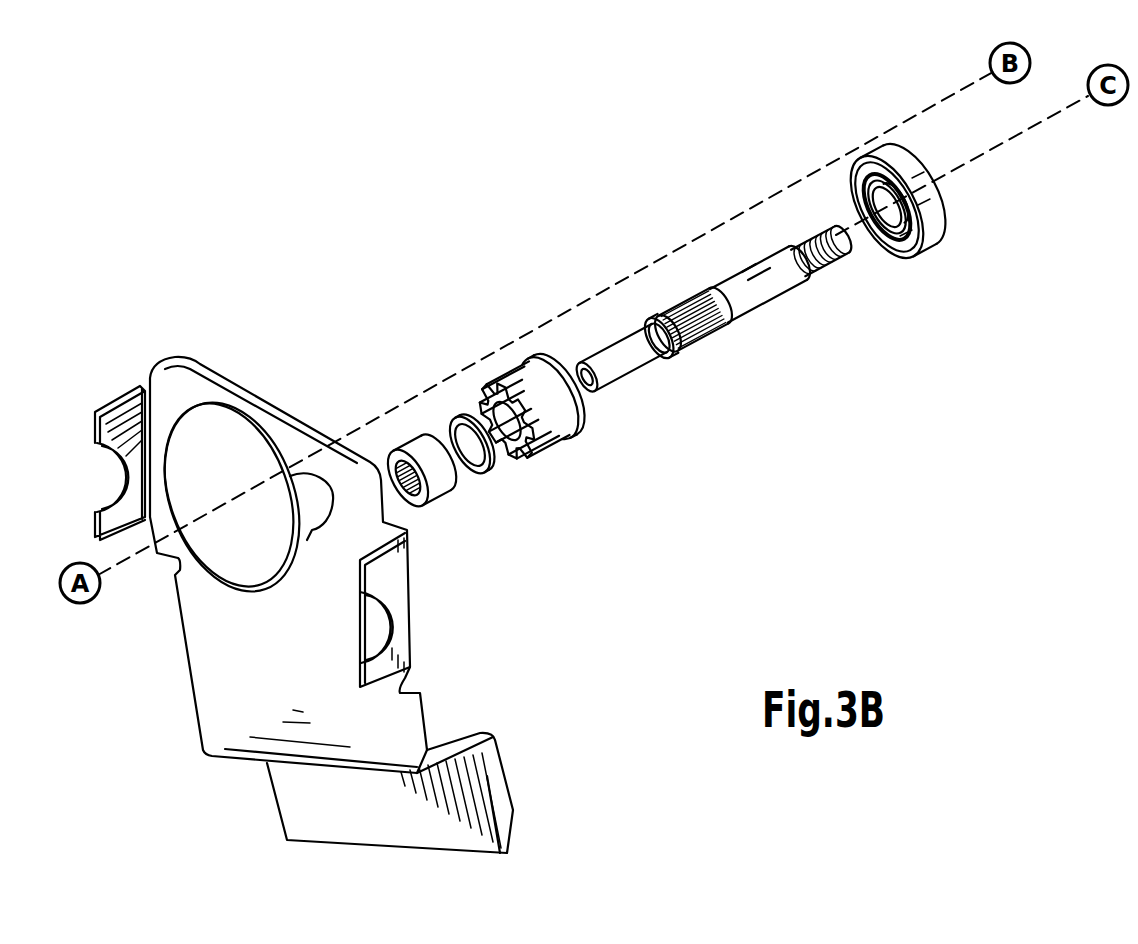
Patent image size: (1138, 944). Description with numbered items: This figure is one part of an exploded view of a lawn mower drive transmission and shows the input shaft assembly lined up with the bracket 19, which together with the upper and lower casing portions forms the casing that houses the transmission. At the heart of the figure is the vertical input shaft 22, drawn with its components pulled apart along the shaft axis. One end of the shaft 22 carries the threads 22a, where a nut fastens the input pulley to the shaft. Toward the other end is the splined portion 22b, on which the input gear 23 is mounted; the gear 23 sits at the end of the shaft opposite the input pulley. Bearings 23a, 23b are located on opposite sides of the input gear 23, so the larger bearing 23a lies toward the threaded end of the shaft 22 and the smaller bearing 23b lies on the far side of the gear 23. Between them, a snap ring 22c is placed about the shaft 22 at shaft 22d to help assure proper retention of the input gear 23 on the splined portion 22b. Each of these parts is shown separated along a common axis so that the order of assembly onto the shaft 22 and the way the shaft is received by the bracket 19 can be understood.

The bracket 19 is at (385, 577).
The vertical input shaft 22 is at (760, 290).
The threads 22a is at (833, 262).
The splined portion 22b is at (687, 332).
The snap ring 22c is at (450, 420).
The shaft 22d is at (655, 352).
The input gear 23 is at (533, 372).
The bearing 23a is at (940, 213).
The bearing 23b is at (445, 490).